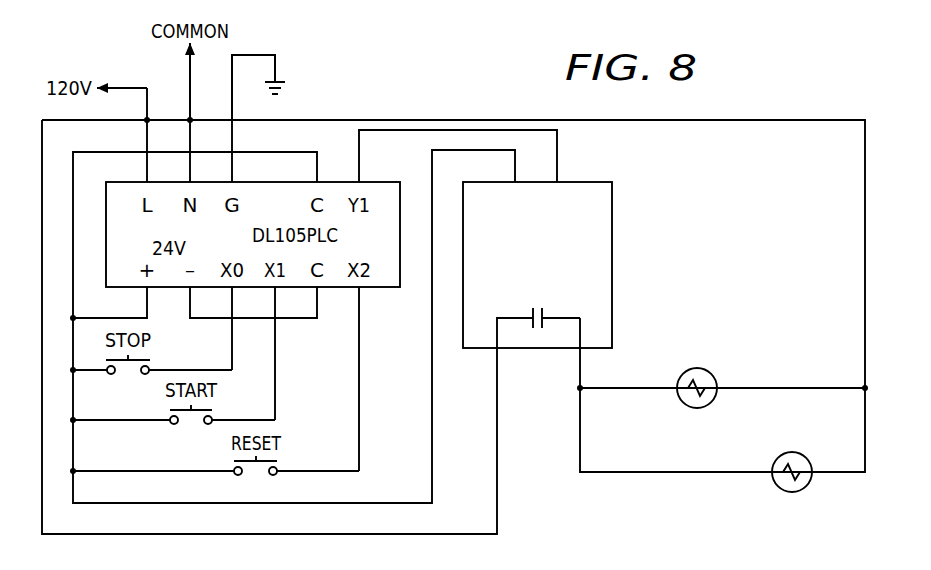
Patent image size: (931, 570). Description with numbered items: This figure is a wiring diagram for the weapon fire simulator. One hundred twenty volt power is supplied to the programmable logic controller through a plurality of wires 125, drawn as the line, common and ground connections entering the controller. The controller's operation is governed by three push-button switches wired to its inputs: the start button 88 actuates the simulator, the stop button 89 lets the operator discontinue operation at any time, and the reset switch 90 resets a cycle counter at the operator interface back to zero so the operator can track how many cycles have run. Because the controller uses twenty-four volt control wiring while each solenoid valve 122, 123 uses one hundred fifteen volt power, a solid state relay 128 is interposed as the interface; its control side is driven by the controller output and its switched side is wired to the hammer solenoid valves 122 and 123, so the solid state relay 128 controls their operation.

The wires 125 is at (277, 41).
The solid state relay 128 is at (613, 257).
The solenoid valve 122 is at (685, 404).
The solenoid valve 123 is at (782, 492).
The stop button 89 is at (123, 375).
The start button 88 is at (187, 425).
The reset switch 90 is at (258, 476).